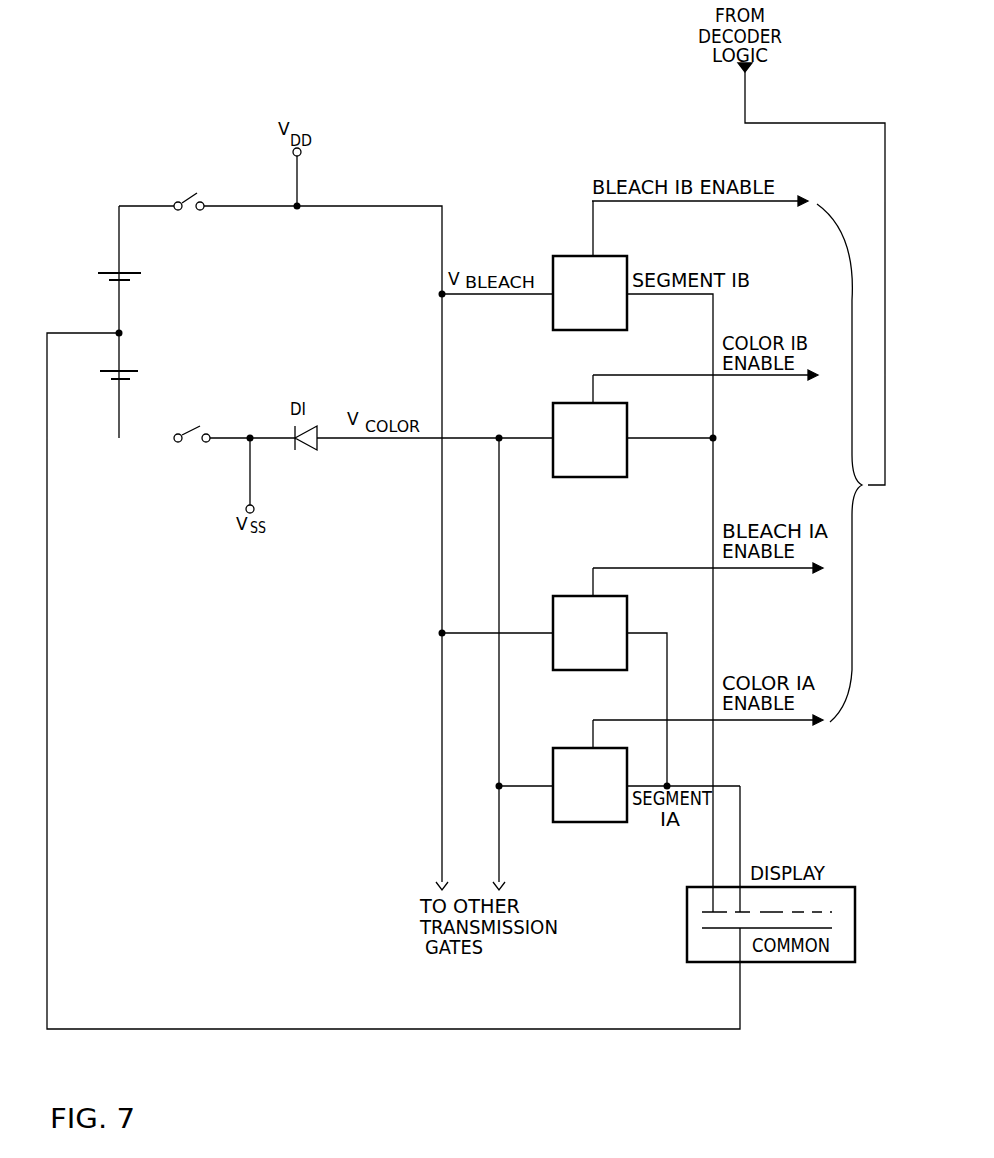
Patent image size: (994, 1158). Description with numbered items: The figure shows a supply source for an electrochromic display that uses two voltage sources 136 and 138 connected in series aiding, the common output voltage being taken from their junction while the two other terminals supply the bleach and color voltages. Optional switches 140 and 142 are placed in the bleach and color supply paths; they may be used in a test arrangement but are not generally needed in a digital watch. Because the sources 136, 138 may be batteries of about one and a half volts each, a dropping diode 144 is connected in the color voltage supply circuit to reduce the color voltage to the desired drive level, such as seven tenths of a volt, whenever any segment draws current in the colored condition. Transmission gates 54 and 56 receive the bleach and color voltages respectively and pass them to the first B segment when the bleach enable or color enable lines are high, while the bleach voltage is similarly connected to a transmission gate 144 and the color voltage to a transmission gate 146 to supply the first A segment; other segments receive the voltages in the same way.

The voltage source 136 is at (108, 270).
The voltage source 138 is at (107, 367).
The switch 140 is at (192, 179).
The switch 142 is at (186, 434).
The dropping diode 144 is at (318, 430).
The transmission gate 54 is at (553, 307).
The transmission gate 56 is at (582, 477).
The transmission gate 146 is at (573, 823).